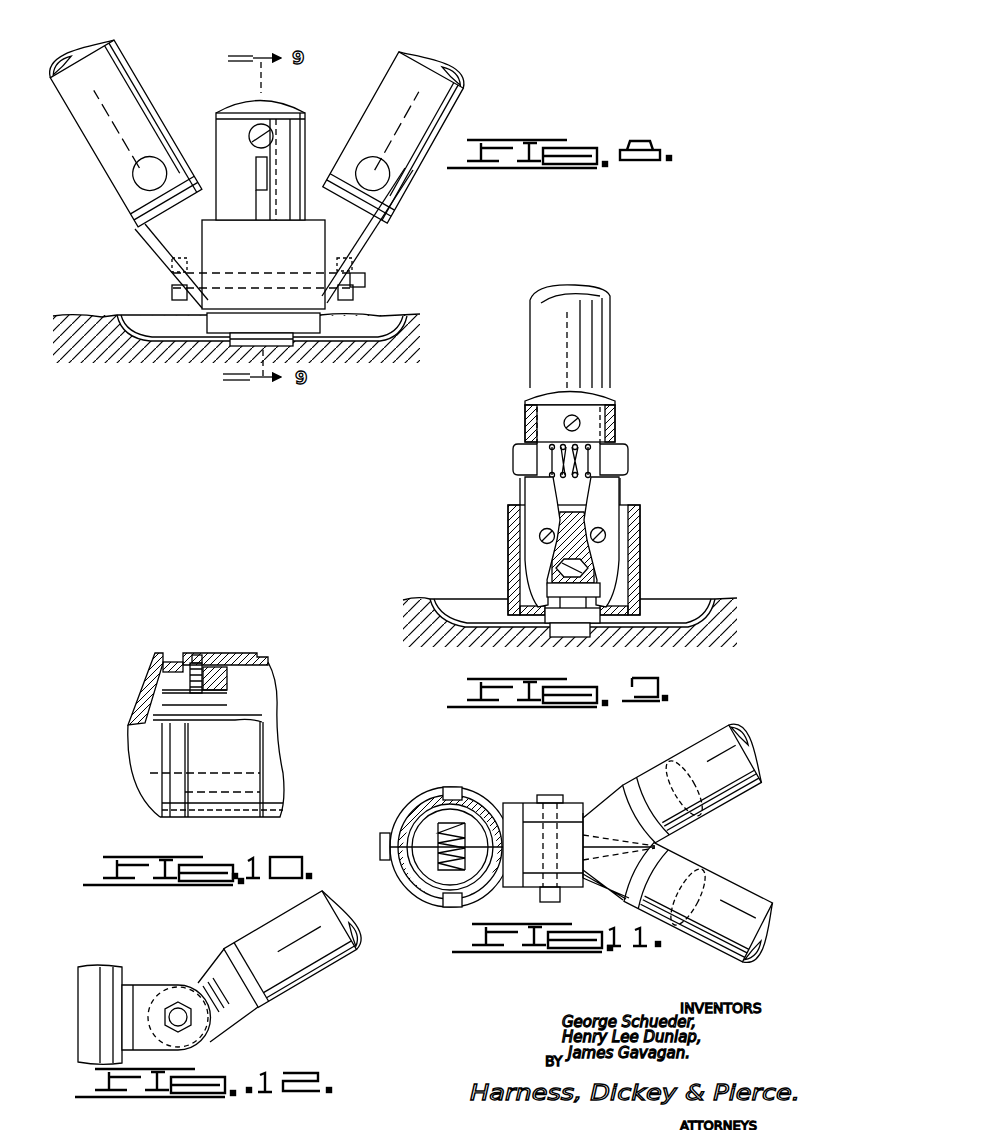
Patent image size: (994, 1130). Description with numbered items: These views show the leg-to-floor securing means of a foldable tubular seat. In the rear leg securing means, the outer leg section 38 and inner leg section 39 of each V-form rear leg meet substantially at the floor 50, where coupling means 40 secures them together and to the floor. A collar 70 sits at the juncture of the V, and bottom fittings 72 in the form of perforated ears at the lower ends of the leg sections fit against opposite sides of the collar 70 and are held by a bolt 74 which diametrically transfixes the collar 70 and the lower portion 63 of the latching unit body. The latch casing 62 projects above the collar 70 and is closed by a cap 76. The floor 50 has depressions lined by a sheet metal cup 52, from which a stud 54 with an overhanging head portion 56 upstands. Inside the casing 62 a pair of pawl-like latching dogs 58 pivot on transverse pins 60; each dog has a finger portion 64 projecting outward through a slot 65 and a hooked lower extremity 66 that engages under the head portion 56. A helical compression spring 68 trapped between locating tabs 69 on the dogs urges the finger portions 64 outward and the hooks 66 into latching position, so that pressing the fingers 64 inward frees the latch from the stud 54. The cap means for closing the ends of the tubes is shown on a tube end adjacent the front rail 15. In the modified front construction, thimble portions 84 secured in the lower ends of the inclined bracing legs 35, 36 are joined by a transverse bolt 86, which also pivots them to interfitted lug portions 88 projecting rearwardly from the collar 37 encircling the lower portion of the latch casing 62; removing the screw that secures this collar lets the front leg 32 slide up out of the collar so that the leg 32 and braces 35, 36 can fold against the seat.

In FIG. 10, the front rail 15 is at (268, 656).
In FIG. 12, the front leg 32 is at (95, 968).
In FIG. 11, the bracing leg 35 is at (700, 742).
In FIG. 12, the bracing leg 35 is at (270, 925).
In FIG. 11, the bracing leg 36 is at (740, 960).
In FIG. 11, the collar 37 is at (458, 790).
In FIG. 8, the outer rear leg section 38 is at (93, 138).
In FIG. 8, the inner rear leg section 39 is at (433, 116).
In FIG. 9, the inner rear leg section 39 is at (605, 300).
In FIG. 11, the inner rear leg section 39 is at (420, 842).
In FIG. 9, the coupling means 40 is at (522, 494).
In FIG. 8, the floor 50 is at (100, 315).
In FIG. 9, the floor 50 is at (410, 600).
In FIG. 8, the sheet metal cup 52 is at (132, 318).
In FIG. 9, the sheet metal cup 52 is at (448, 597).
In FIG. 8, the stud 54 is at (245, 340).
In FIG. 9, the stud 54 is at (582, 634).
In FIG. 9, the head portion 56 is at (560, 625).
In FIG. 9, the latching dog 58 is at (605, 552).
In FIG. 9, the pin 60 is at (604, 535).
In FIG. 8, the latch casing 62 is at (296, 130).
In FIG. 9, the latch casing 62 is at (616, 425).
In FIG. 9, the lower portion of latching unit body 63 is at (560, 562).
In FIG. 8, the finger portion 64 is at (262, 170).
In FIG. 9, the finger portion 64 is at (626, 458).
In FIG. 11, the finger portion 64 is at (442, 792).
In FIG. 8, the slot 65 is at (258, 202).
In FIG. 9, the slot 65 is at (612, 488).
In FIG. 9, the hooked lower extremity 66 is at (605, 605).
In FIG. 9, the helical compression spring 68 is at (550, 448).
In FIG. 9, the locating tab 69 is at (553, 460).
In FIG. 8, the collar 70 is at (268, 261).
In FIG. 9, the collar 70 is at (508, 524).
In FIG. 8, the bottom fitting 72 is at (168, 247).
In FIG. 8, the bolt 74 is at (365, 277).
In FIG. 9, the bolt 74 is at (555, 598).
In FIG. 8, the cap 76 is at (283, 101).
In FIG. 9, the cap 76 is at (528, 394).
In FIG. 11, the thimble portion 84 is at (612, 800).
In FIG. 12, the thimble portion 84 is at (215, 960).
In FIG. 11, the transverse bolt 86 is at (550, 795).
In FIG. 12, the transverse bolt 86 is at (176, 1007).
In FIG. 11, the lug portion 88 is at (510, 805).
In FIG. 12, the lug portion 88 is at (140, 988).